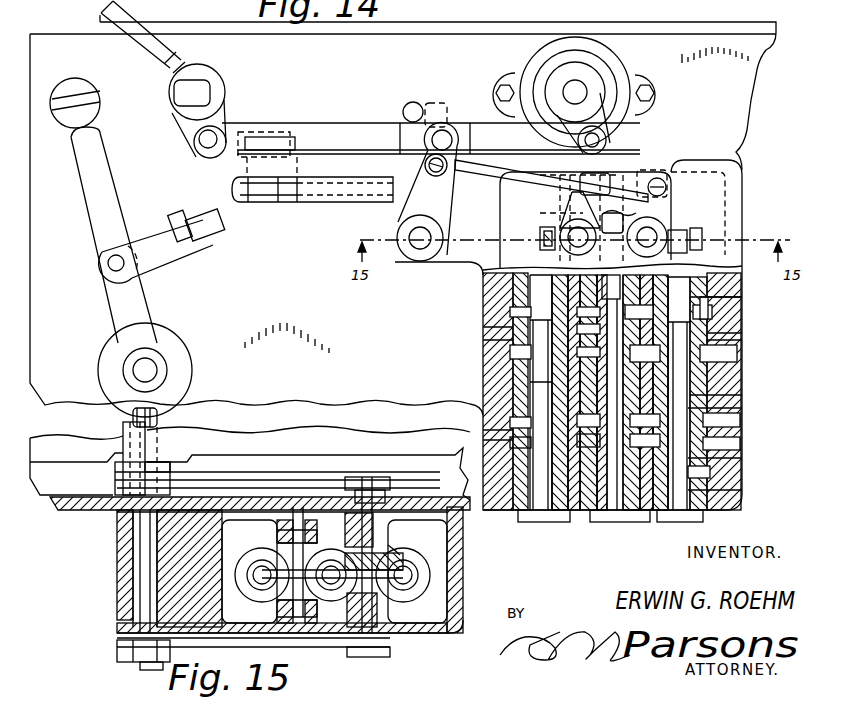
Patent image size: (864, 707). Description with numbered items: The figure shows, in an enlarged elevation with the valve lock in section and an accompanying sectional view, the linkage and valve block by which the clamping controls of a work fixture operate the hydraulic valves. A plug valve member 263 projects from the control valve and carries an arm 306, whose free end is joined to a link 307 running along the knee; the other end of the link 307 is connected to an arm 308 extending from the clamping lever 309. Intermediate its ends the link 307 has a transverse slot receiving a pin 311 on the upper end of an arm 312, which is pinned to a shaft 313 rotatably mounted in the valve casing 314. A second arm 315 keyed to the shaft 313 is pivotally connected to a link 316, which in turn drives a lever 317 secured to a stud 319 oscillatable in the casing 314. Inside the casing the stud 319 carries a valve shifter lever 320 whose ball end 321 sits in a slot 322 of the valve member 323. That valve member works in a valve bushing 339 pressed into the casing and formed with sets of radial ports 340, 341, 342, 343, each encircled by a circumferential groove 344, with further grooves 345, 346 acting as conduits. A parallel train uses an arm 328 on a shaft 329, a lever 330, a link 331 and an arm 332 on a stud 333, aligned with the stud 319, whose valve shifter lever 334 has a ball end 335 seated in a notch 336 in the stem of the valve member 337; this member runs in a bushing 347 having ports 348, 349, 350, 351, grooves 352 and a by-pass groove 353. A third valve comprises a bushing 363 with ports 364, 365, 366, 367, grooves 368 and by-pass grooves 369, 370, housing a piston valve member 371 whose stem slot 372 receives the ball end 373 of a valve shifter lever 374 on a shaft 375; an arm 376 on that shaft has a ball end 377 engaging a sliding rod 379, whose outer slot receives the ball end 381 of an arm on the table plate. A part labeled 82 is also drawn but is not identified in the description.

In FIG. 14, the clamping lever 309 is at (100, 18).
In FIG. 14, the plug valve member 263 is at (575, 92).
In FIG. 14, the circumferential groove 370 is at (186, 92).
In FIG. 14, the arm 308 is at (222, 113).
In FIG. 14, the link 307 is at (368, 131).
In FIG. 15, the link 307 is at (343, 650).
In FIG. 14, the pin 311 is at (445, 125).
In FIG. 14, the arm 312 is at (456, 148).
In FIG. 14, the arm 306 is at (591, 95).
In FIG. 14, the ball end 377 is at (585, 205).
In FIG. 14, the link 316 is at (625, 198).
In FIG. 14, the ball end 321 is at (640, 175).
In FIG. 15, the ball end 321 is at (348, 600).
In FIG. 14, the valve casing 314 is at (741, 162).
In FIG. 15, the valve casing 314 is at (126, 555).
In FIG. 14, the lever 317 is at (668, 198).
In FIG. 14, the slot 322 is at (662, 210).
In FIG. 14, the ball end 335 is at (662, 228).
In FIG. 15, the ball end 335 is at (410, 573).
In FIG. 14, the notch 336 is at (704, 243).
In FIG. 14, the control lever 82 is at (108, 194).
In FIG. 14, the ball end 381 is at (262, 198).
In FIG. 14, the rod 379 is at (333, 201).
In FIG. 14, the second arm 315 is at (398, 200).
In FIG. 14, the arm 328 is at (565, 200).
In FIG. 14, the transverse groove or slot 372 is at (541, 237).
In FIG. 14, the ball end 373 is at (560, 250).
In FIG. 14, the shaft 313 is at (412, 262).
In FIG. 15, the shaft 313 is at (140, 572).
In FIG. 14, the circumferential groove 368 is at (512, 311).
In FIG. 14, the radial ports 367 is at (512, 318).
In FIG. 14, the circumferential groove 369 is at (515, 340).
In FIG. 14, the radial ports 366 is at (515, 358).
In FIG. 14, the radial ports 365 is at (515, 425).
In FIG. 14, the radial ports 340 is at (718, 306).
In FIG. 14, the radial ports 348 is at (705, 318).
In FIG. 14, the radial ports 341 is at (723, 347).
In FIG. 14, the circumferential groove 353 is at (720, 370).
In FIG. 14, the radial ports 342 is at (705, 390).
In FIG. 14, the circumferential groove 345 is at (705, 410).
In FIG. 14, the radial ports 349 is at (720, 426).
In FIG. 14, the radial ports 350 is at (705, 440).
In FIG. 14, the circumferential groove 346 is at (720, 456).
In FIG. 14, the radial ports 351 is at (722, 470).
In FIG. 14, the valve member 337 is at (722, 490).
In FIG. 14, the bushing 347 is at (700, 514).
In FIG. 14, the circumferential grooves 352 is at (652, 512).
In FIG. 14, the valve member 323 is at (612, 510).
In FIG. 14, the radial ports 343 is at (628, 512).
In FIG. 14, the valve bushing 339 is at (578, 512).
In FIG. 14, the circumferential groove 344 is at (538, 500).
In FIG. 14, the piston valve member 371 is at (560, 512).
In FIG. 14, the valve bushing 363 is at (527, 520).
In FIG. 14, the radial ports 364 is at (521, 517).
In FIG. 15, the shaft 329 is at (163, 420).
In FIG. 15, the lever 330 is at (197, 445).
In FIG. 15, the link 331 is at (259, 470).
In FIG. 15, the arm 376 is at (325, 493).
In FIG. 15, the arm 332 is at (398, 480).
In FIG. 15, the stud 333 is at (375, 520).
In FIG. 15, the valve shifter lever 334 is at (392, 557).
In FIG. 15, the valve shifter lever 374 is at (277, 553).
In FIG. 15, the shaft 375 is at (277, 607).
In FIG. 15, the valve shifter lever 320 is at (385, 595).
In FIG. 15, the stud 319 is at (392, 615).